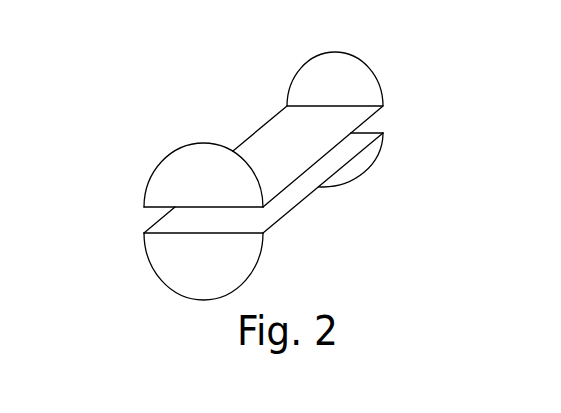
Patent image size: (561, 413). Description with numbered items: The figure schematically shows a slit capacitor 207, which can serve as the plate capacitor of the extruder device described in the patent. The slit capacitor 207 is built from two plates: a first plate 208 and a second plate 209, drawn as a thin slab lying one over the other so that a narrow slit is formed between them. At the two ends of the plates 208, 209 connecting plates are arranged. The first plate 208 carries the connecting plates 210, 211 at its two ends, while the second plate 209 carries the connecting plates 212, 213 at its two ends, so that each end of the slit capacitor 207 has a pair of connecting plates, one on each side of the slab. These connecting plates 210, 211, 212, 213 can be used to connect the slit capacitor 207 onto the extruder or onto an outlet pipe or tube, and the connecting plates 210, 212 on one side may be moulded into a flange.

The slit capacitor 207 is at (409, 59).
The first plate 208 is at (272, 131).
The second plate 209 is at (293, 208).
The connecting plate 210 is at (173, 169).
The connecting plate 211 is at (338, 66).
The connecting plate 212 is at (236, 261).
The connecting plate 213 is at (368, 168).